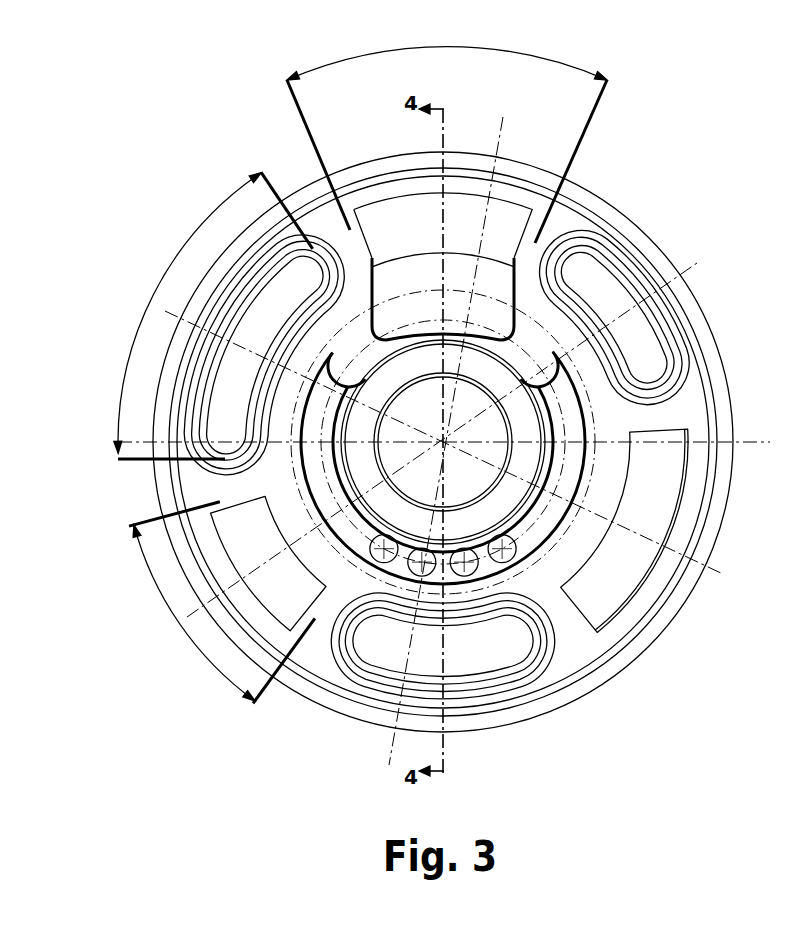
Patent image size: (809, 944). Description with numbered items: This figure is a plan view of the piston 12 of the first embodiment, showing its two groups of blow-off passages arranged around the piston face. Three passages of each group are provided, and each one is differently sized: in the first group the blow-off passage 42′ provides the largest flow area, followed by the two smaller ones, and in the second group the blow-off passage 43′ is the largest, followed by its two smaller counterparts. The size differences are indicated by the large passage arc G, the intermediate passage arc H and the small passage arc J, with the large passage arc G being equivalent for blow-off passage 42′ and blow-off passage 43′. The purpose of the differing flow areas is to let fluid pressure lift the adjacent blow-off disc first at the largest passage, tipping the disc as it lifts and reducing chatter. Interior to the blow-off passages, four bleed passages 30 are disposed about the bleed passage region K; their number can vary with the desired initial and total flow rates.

The piston 12 is at (587, 188).
The bleed passages 30 is at (468, 568).
The blow-off passage 42′ is at (228, 405).
The blow-off passage 43′ is at (620, 583).
The intermediate passage arc H is at (447, 135).
The large passage arc G is at (213, 316).
The small passage arc J is at (222, 603).
The bleed passage region K is at (558, 588).